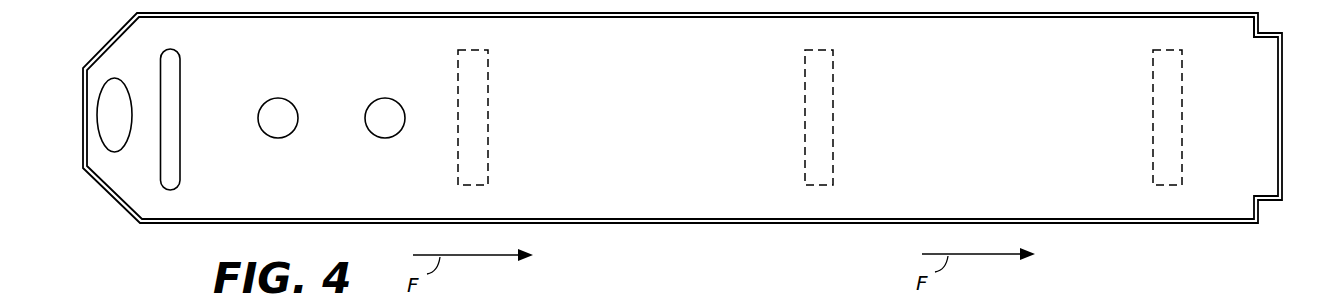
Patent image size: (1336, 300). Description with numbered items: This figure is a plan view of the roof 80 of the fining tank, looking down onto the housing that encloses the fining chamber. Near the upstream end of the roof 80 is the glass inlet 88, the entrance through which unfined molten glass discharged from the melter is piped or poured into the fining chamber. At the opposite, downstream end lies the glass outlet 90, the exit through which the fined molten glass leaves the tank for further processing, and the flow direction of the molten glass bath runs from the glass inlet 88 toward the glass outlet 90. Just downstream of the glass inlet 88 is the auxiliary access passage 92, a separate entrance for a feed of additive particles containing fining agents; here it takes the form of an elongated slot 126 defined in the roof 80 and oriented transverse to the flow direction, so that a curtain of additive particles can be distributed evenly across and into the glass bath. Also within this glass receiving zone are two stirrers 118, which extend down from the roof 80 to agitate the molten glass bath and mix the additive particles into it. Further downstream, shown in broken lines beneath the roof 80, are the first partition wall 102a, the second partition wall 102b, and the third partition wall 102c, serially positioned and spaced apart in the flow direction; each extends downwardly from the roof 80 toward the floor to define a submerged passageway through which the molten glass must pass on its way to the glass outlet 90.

The roof 80 is at (698, 130).
The glass inlet 88 is at (110, 139).
The glass outlet 90 is at (1275, 40).
The auxiliary access passage 92 is at (175, 67).
The first partition wall 102a is at (473, 73).
The second partition wall 102b is at (818, 71).
The third partition wall 102c is at (1172, 73).
The stirrers 118 is at (372, 103).
The elongated slot 126 is at (172, 153).